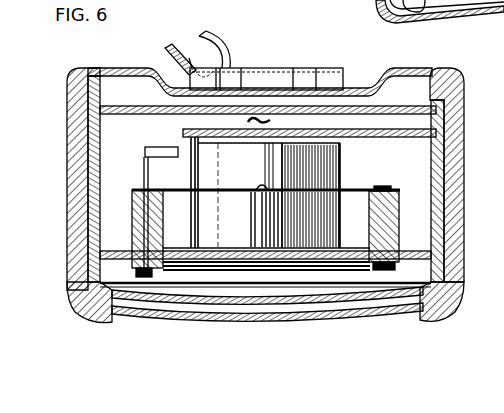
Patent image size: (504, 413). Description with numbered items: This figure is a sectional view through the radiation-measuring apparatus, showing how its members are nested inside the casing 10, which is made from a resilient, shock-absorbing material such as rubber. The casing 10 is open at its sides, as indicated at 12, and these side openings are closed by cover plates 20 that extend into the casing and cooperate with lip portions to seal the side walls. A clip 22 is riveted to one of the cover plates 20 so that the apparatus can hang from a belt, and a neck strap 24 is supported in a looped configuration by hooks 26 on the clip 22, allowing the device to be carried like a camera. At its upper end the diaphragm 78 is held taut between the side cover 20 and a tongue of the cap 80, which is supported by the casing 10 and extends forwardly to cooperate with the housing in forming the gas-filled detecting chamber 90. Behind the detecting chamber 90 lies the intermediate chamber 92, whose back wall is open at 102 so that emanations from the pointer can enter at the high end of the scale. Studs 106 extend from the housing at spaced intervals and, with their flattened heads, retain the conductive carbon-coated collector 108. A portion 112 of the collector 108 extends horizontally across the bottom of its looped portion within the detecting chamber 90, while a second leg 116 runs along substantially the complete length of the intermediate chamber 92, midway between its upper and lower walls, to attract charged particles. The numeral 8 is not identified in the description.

The casing 10 is at (464, 198).
The side opening of casing 12 is at (96, 69).
The cover plate 20 is at (333, 318).
The clip 22 is at (190, 66).
The neck strap 24 is at (167, 50).
The hook 26 is at (220, 44).
The diaphragm 78 is at (470, 6).
The adjacent figure element 8 is at (500, 41).
The cap 80 is at (250, 296).
The detecting chamber 90 is at (195, 291).
The intermediate chamber 92 is at (100, 158).
The open back wall of intermediate chamber 102 is at (143, 132).
The stud 106 is at (384, 187).
The collector 108 is at (353, 189).
The collector portion 112 is at (363, 262).
The second leg of collector 116 is at (224, 188).